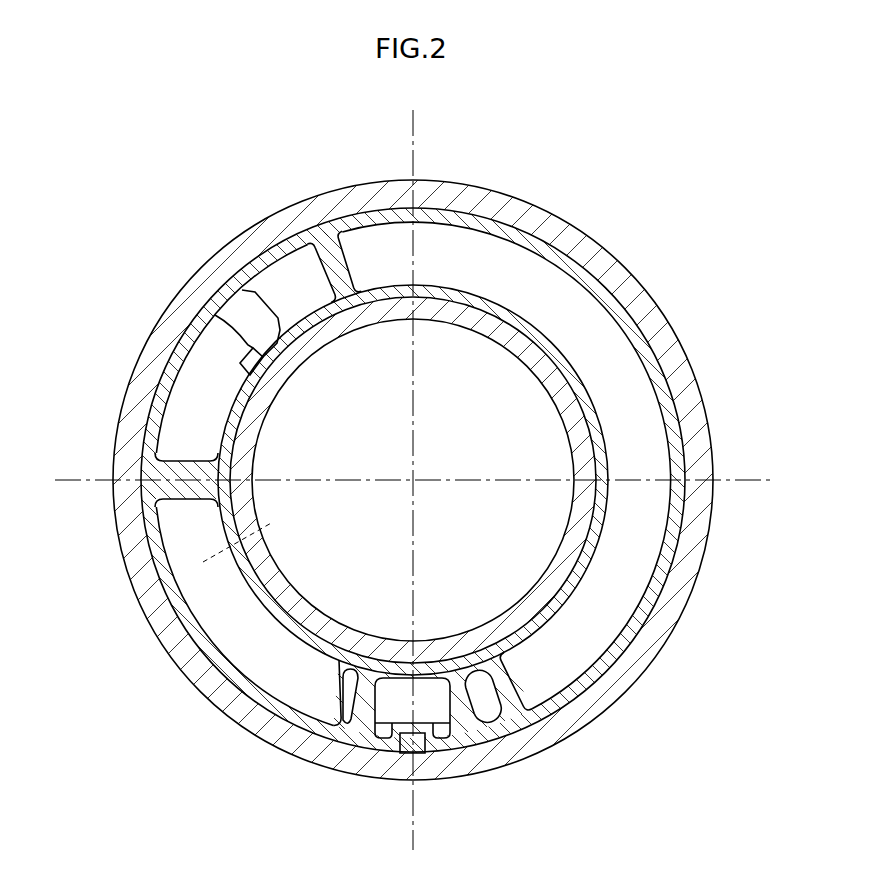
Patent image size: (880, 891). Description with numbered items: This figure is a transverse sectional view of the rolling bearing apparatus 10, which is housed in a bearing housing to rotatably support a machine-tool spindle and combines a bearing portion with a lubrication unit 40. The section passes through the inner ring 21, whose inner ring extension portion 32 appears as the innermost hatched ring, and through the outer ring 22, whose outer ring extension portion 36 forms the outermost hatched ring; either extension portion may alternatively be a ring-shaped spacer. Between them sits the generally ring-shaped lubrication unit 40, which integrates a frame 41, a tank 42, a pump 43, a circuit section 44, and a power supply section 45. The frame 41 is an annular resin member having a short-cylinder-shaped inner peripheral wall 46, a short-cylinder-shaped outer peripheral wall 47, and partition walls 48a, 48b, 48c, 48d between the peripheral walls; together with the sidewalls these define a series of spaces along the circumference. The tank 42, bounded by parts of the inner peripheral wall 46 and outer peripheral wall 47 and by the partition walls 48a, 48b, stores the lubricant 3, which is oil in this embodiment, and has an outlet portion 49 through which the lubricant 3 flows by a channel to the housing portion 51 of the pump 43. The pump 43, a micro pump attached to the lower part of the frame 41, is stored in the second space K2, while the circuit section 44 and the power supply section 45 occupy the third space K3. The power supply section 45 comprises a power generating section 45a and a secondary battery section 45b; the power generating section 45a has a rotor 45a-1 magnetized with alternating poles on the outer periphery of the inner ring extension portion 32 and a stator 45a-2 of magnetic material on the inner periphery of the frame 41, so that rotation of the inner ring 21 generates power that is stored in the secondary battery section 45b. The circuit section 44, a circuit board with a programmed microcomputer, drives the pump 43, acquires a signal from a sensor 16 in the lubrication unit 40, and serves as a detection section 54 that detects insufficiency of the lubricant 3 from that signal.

The lubricant 3 is at (576, 331).
The rolling bearing apparatus 10 is at (602, 232).
The sensor 16 is at (425, 702).
The inner ring 21 is at (305, 581).
The outer ring 22 is at (148, 642).
The inner ring extension portion 32 is at (276, 567).
The outer ring extension portion 36 is at (140, 572).
The lubrication unit 40 is at (488, 204).
The frame 41 is at (315, 228).
The tank 42 is at (622, 383).
The pump 43 is at (393, 711).
The circuit section 44 is at (248, 642).
The power supply section 45 is at (188, 388).
The power generating section 45a is at (207, 320).
The rotor 45a-1 is at (222, 353).
The stator 45a-2 is at (258, 363).
The secondary battery section 45b is at (177, 436).
The inner peripheral wall 46 is at (553, 622).
The outer peripheral wall 47 is at (642, 610).
The partition wall 48a is at (542, 707).
The partition wall 48b is at (347, 262).
The partition wall 48c is at (343, 670).
The partition wall 48d is at (472, 668).
The outlet portion 49 is at (504, 762).
The housing portion 51 is at (403, 697).
The detection section 54 is at (247, 531).
The second space K2 is at (440, 745).
The third space K3 is at (158, 508).